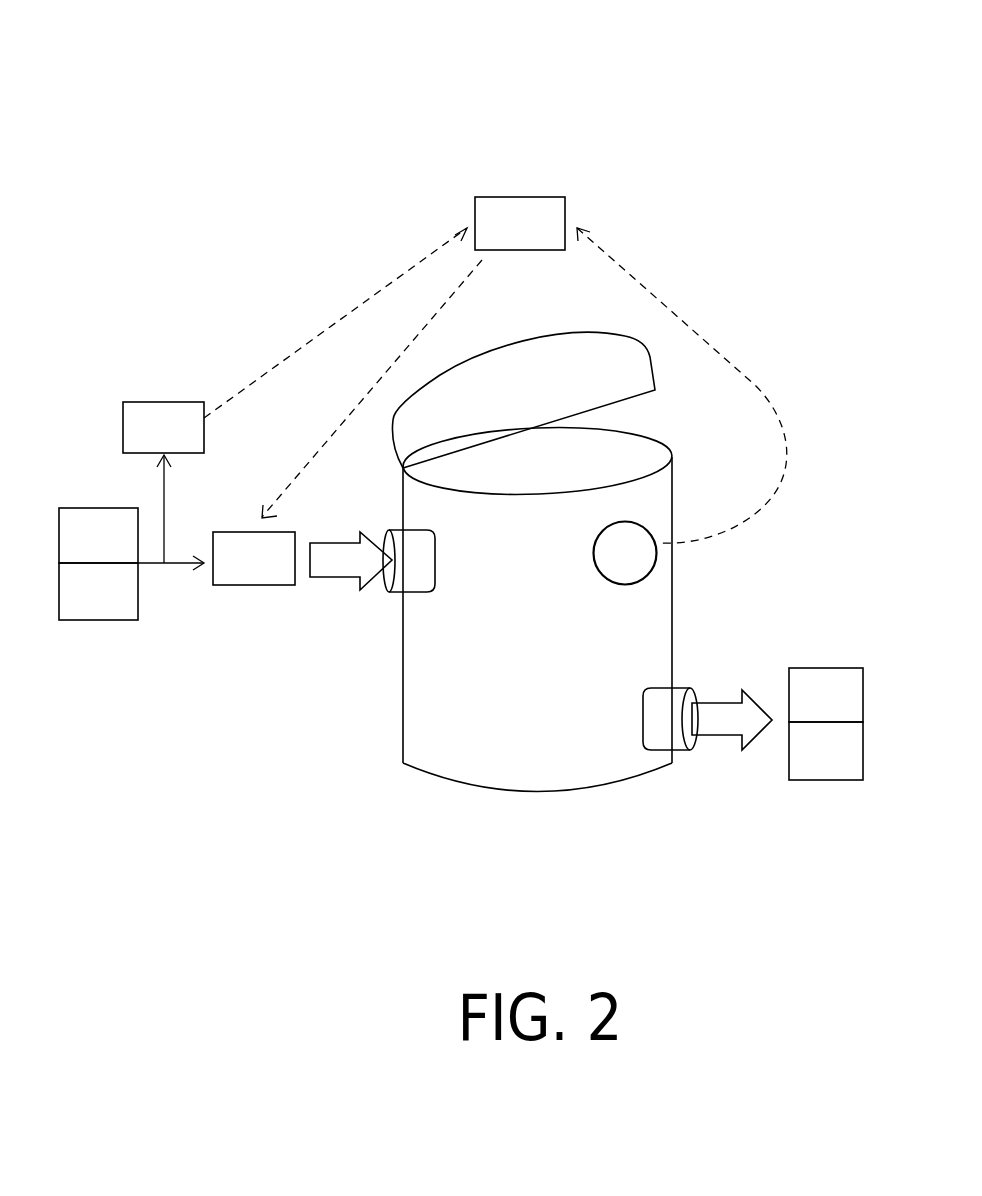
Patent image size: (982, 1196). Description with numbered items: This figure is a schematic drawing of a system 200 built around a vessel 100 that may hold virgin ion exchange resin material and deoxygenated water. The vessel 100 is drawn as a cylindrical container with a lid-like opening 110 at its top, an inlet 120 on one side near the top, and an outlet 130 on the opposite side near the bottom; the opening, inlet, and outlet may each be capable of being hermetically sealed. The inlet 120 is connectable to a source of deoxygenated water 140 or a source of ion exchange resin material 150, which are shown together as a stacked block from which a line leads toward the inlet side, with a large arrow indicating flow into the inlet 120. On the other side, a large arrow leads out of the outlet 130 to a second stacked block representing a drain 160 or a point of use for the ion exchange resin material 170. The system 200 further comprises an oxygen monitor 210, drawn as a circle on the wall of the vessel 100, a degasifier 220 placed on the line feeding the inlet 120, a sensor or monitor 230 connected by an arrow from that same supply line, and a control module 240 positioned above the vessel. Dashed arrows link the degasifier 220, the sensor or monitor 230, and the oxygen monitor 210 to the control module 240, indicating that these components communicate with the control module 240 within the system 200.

The system 200 is at (300, 111).
The vessel 100 is at (522, 603).
The opening 110 is at (620, 447).
The inlet 120 is at (418, 572).
The outlet 130 is at (670, 730).
The source of deoxygenated water 140 is at (98, 535).
The source of ion exchange resin material 150 is at (98, 591).
The drain 160 is at (826, 695).
The point of use for the ion exchange resin material 170 is at (826, 751).
The oxygen monitor 210 is at (633, 557).
The degasifier 220 is at (347, 422).
The sensor or monitor 230 is at (295, 340).
The control module 240 is at (520, 223).